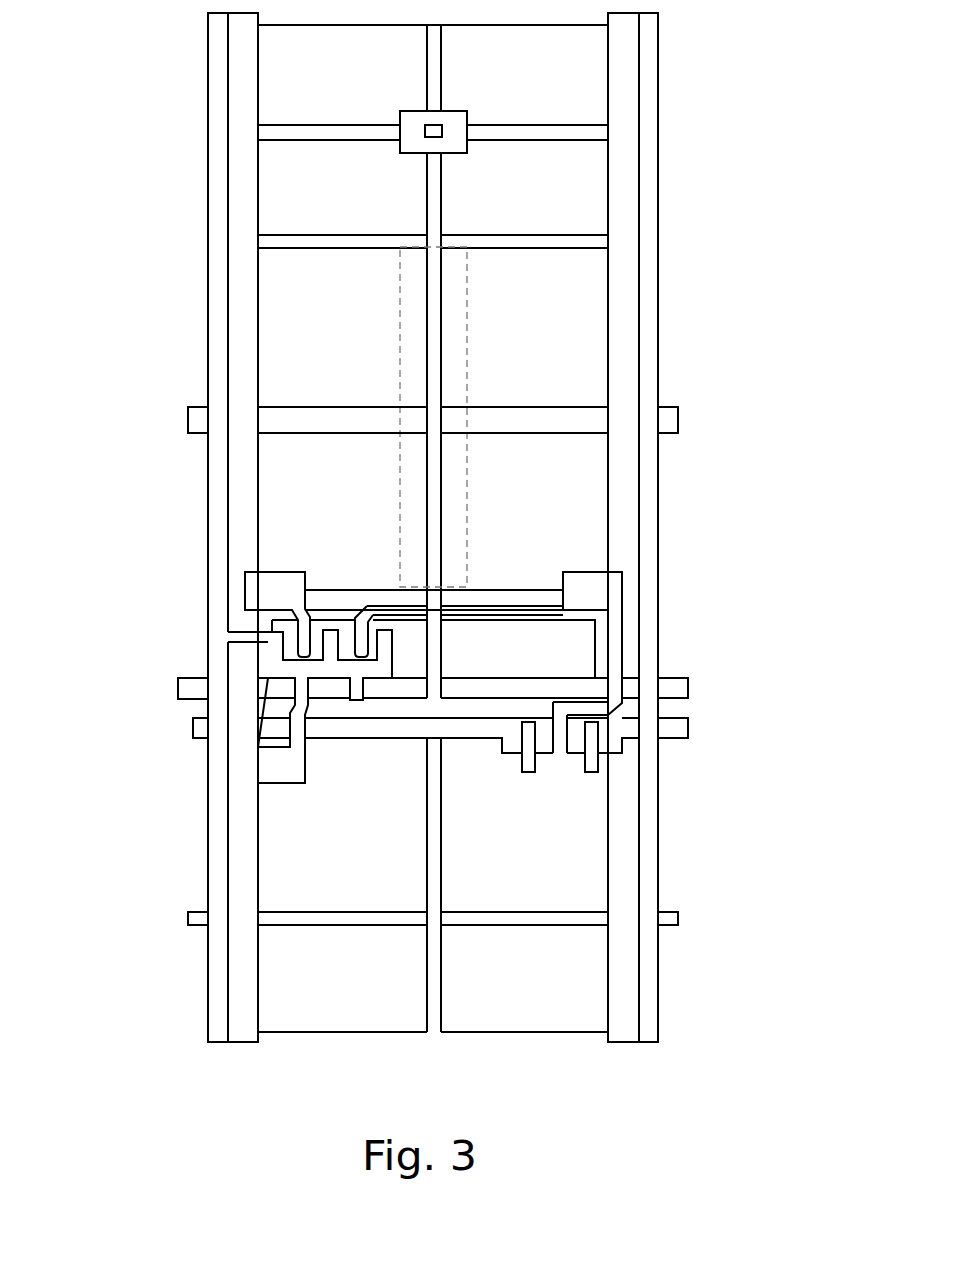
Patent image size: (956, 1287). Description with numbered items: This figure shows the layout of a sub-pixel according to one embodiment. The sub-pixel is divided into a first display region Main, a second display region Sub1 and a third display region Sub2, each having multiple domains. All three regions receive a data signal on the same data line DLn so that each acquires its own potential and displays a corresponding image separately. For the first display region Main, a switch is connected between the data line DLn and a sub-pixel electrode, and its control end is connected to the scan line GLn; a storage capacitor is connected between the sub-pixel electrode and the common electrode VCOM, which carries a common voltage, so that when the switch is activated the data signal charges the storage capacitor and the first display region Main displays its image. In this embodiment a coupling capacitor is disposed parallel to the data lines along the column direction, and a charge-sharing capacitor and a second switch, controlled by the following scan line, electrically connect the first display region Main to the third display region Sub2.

The second display region Sub1 is at (737, 13).
The third display region Sub2 is at (737, 248).
The first display region Main is at (737, 738).
The common electrode VCOM is at (387, 422).
The scan line GLn is at (402, 684).
The data line DLn is at (238, 553).